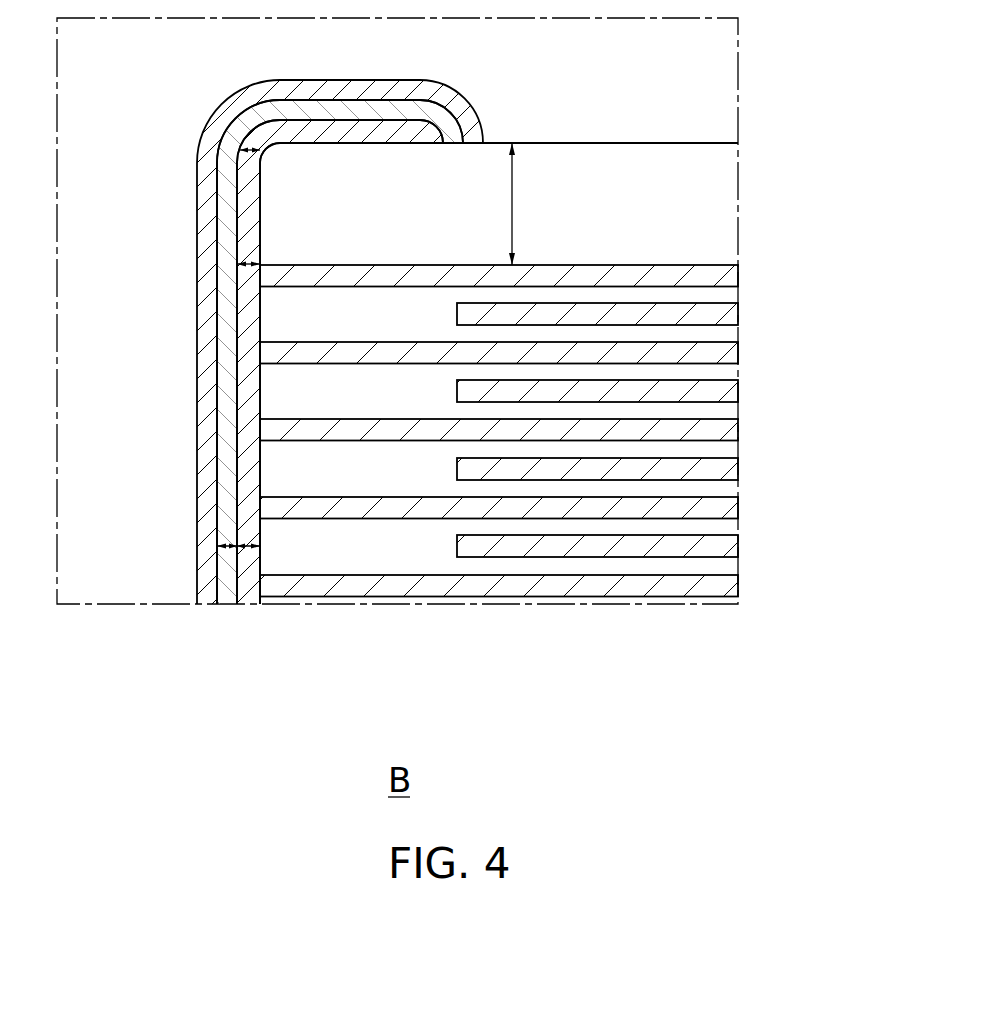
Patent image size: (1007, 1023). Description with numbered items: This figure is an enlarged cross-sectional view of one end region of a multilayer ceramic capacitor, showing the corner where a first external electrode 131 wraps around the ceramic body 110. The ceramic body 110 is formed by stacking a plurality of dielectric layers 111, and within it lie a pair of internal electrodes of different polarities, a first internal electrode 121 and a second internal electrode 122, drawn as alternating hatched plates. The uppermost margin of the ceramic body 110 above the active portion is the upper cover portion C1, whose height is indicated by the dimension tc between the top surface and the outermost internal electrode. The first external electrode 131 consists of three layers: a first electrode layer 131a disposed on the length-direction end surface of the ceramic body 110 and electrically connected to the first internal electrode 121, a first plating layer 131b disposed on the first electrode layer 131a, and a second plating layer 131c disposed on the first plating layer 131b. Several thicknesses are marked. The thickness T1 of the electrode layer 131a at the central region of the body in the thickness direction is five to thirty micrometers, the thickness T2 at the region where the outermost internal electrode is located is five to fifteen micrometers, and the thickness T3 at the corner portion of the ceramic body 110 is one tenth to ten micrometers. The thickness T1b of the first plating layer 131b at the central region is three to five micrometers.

The ceramic body 110 is at (620, 143).
The dielectric layer 111 is at (722, 332).
The first internal electrode 121 is at (733, 277).
The second internal electrode 122 is at (735, 311).
The first external electrode 131 is at (307, 414).
The first electrode layer 131a is at (340, 407).
The first plating layer 131b is at (228, 604).
The second plating layer 131c is at (208, 604).
The upper cover portion C1 is at (755, 200).
The clearance thickness tc is at (526, 204).
The thickness of electrode layer at central region T1 is at (250, 540).
The thickness of first plating layer at central region T1b is at (227, 540).
The thickness of electrode layer at outermost internal electrode region T2 is at (237, 263).
The thickness of electrode layer at corner portion T3 is at (248, 90).